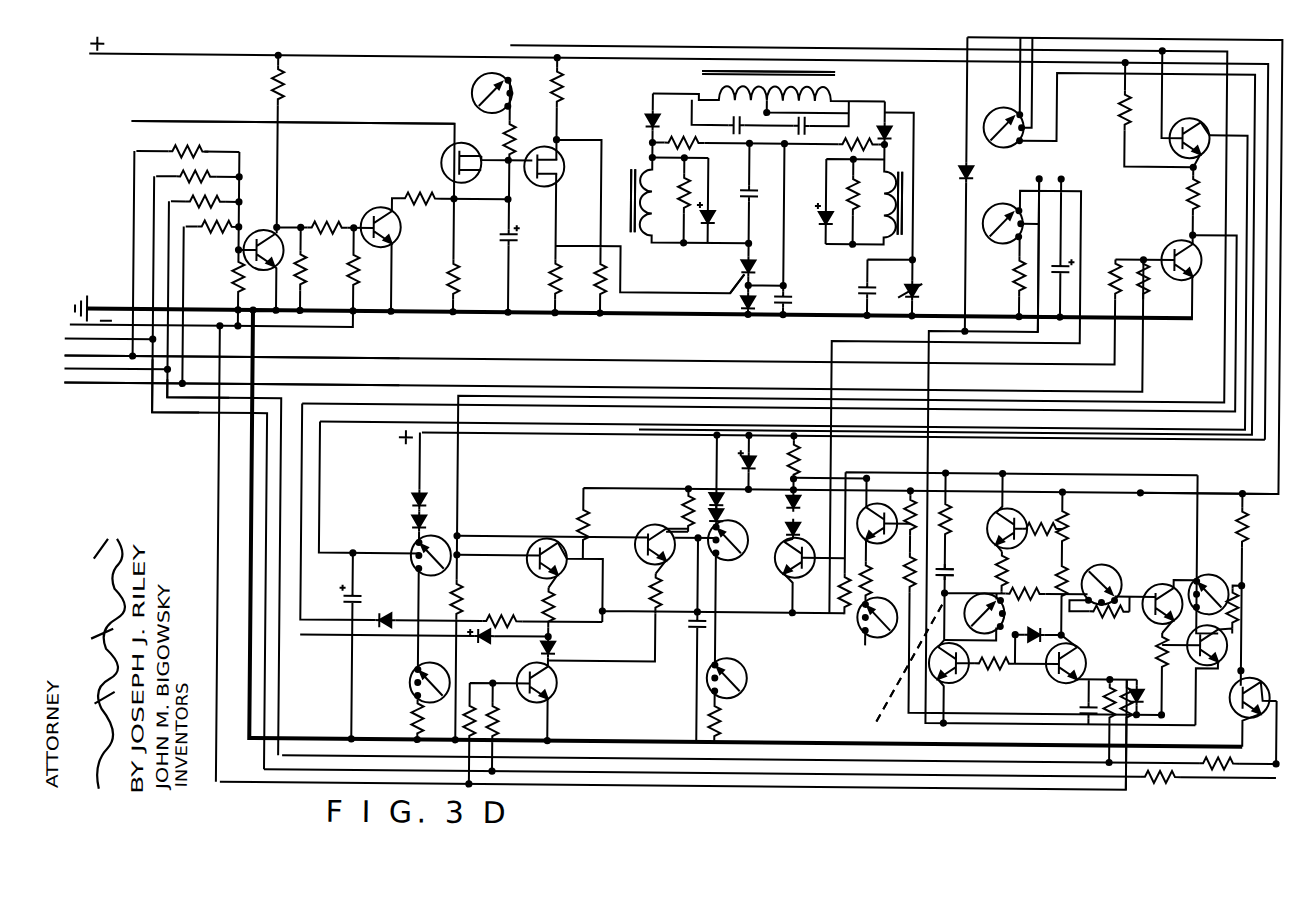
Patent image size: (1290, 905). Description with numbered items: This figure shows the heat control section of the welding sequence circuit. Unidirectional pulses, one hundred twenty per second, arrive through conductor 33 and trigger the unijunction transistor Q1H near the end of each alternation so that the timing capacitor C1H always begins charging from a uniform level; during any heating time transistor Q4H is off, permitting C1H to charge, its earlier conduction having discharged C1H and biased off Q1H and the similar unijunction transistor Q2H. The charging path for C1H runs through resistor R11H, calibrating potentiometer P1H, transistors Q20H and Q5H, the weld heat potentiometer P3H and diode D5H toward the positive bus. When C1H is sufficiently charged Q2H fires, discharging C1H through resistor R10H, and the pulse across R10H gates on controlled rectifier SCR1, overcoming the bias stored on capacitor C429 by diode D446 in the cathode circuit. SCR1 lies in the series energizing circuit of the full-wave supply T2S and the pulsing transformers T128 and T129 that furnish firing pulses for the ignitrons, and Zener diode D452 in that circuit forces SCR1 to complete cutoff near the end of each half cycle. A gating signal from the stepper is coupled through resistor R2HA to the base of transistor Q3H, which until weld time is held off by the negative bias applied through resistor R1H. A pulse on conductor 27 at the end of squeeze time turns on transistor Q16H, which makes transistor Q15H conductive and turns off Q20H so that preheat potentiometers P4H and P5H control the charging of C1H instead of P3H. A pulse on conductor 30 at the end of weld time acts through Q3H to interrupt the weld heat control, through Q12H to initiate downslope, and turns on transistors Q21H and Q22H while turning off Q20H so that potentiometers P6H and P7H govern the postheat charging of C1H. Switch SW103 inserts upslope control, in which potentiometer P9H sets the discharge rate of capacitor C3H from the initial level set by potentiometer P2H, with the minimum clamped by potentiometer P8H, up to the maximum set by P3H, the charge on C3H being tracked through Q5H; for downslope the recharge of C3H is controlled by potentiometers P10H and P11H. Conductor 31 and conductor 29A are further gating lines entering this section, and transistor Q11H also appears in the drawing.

The conductor 33 is at (162, 122).
The resistor R2HA is at (203, 173).
The transistor Q3H is at (240, 250).
The resistor R1H is at (236, 283).
The transistor Q4H is at (394, 244).
The unijunction transistor Q1H is at (442, 156).
The unijunction transistor Q2H is at (552, 179).
The calibrating potentiometer P1H is at (480, 87).
The resistor R11H is at (506, 140).
The capacitor C1H is at (505, 242).
The resistor R10H is at (554, 272).
The pulsing transformer T128 is at (650, 161).
The full-wave power supply T2S is at (833, 82).
The pulsing transformer T129 is at (903, 176).
The controlled rectifier SCR1 is at (740, 266).
The capacitor C429 is at (789, 295).
The diode D446 is at (740, 302).
The Zener diode D452 is at (905, 304).
The heat control potentiometer P3H is at (995, 105).
The potentiometer P2H is at (1000, 205).
The transistor Q15H is at (1210, 106).
The transistor Q16H is at (1168, 239).
The conductor 27 is at (326, 357).
The conductor 31 is at (288, 384).
The line 29A is at (150, 406).
The conductor 30 is at (203, 398).
The preheat level potentiometer P4H is at (420, 546).
The preheat level potentiometer P5H is at (420, 666).
The transistor Q20H is at (531, 569).
The transistor Q21H is at (560, 680).
The transistor Q22H is at (649, 527).
The diode D5H is at (740, 462).
The quench heat level potentiometer P6H is at (740, 536).
The transistor Q5H is at (780, 569).
The quench heat level potentiometer P7H is at (739, 666).
The potentiometer P8H is at (861, 627).
The switch SW103 is at (885, 662).
The upslope capacitor C3H is at (970, 556).
The potentiometer P9H is at (990, 583).
The postheat level potentiometer P10H is at (1120, 556).
The postheat level potentiometer P11H is at (1217, 572).
The transistor Q11H is at (1052, 674).
The transistor Q12H is at (1256, 676).